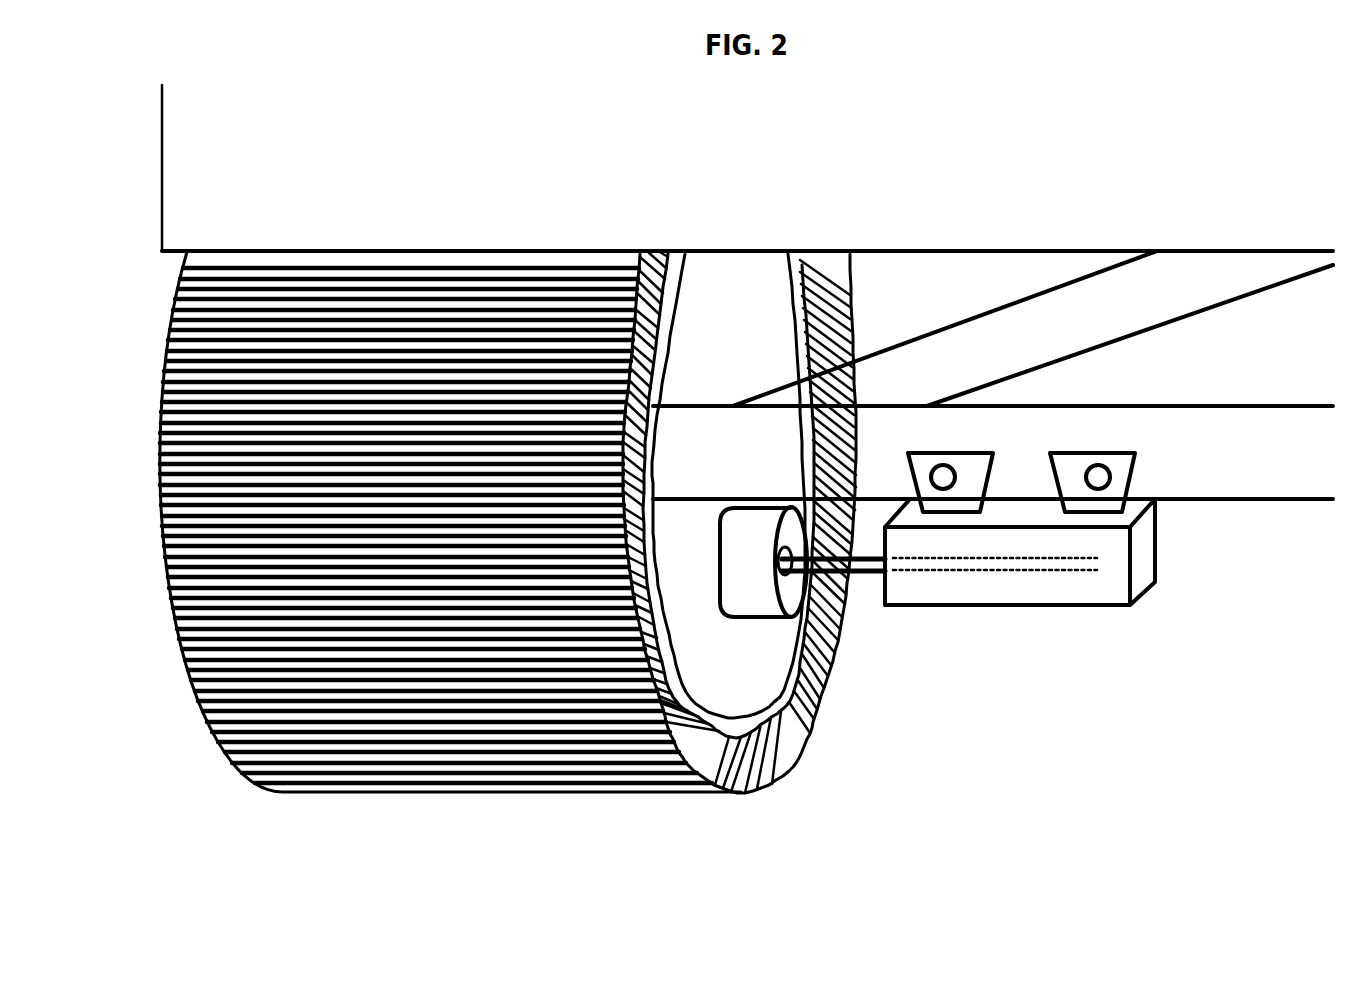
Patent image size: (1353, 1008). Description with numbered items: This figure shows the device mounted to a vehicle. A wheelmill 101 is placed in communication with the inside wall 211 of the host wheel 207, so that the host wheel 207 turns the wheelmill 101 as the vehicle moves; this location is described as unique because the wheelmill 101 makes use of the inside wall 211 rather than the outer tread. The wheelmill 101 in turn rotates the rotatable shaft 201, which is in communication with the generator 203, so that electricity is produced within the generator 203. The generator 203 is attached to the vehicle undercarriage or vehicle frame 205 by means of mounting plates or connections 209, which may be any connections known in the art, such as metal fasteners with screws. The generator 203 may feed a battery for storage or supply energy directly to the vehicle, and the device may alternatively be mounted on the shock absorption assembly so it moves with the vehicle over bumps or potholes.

The wheelmill 101 is at (828, 677).
The rotatable shaft 201 is at (1037, 573).
The generator 203 is at (1095, 593).
The vehicle undercarriage 205 is at (908, 370).
The host wheel 207 is at (488, 818).
The mounting plates 209 is at (1137, 463).
The inside wall 211 is at (755, 341).